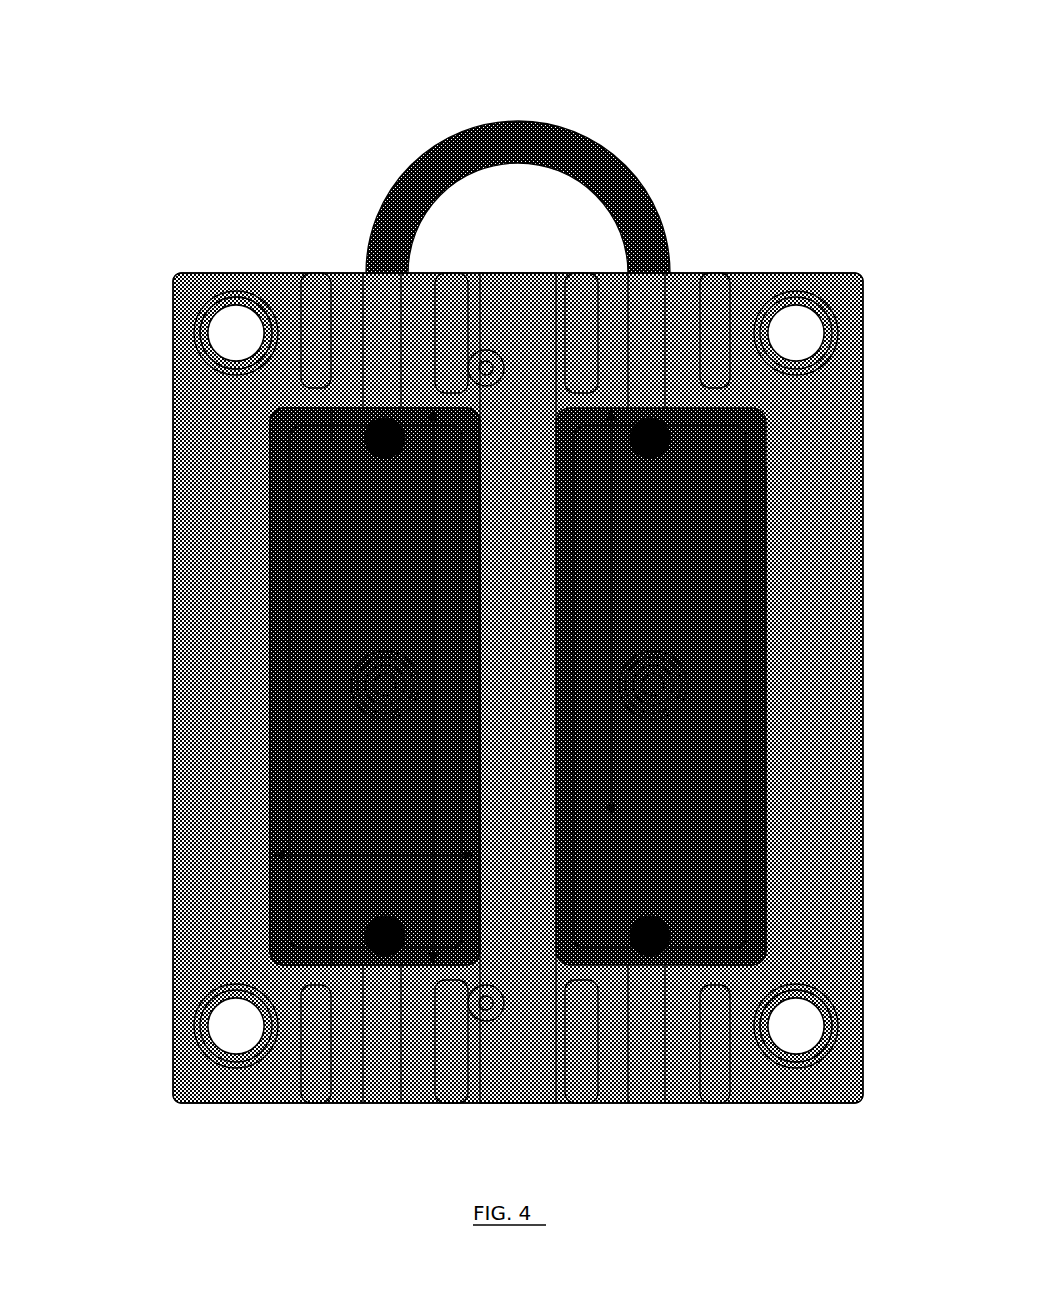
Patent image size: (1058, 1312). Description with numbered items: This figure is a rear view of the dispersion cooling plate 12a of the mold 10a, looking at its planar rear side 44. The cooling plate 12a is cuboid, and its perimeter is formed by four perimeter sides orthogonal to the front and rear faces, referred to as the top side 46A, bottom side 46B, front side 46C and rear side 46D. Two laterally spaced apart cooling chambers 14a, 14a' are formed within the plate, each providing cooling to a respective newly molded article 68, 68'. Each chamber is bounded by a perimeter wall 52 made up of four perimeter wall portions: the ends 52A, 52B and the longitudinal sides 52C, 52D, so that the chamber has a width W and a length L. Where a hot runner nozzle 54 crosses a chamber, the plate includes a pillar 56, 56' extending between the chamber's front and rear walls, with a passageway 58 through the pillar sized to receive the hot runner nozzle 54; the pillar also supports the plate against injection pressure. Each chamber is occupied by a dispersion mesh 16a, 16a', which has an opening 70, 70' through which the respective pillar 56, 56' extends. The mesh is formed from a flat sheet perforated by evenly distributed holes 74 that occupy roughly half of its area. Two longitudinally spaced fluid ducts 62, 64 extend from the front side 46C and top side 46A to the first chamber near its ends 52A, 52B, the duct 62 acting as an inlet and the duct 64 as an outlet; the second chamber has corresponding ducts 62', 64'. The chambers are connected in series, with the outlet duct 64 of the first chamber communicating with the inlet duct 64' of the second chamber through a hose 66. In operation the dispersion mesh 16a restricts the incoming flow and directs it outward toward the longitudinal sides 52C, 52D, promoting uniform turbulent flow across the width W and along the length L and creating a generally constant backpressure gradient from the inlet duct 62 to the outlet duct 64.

The mold 10a is at (243, 78).
The cooling plate 12a is at (150, 415).
The cooling chamber 14a is at (156, 688).
The cooling chamber 14a' is at (860, 688).
The dispersion mesh 16a is at (190, 941).
The dispersion mesh 16a' is at (828, 917).
The rear side 44 is at (790, 485).
The top side 46A is at (228, 265).
The bottom side 46B is at (785, 1095).
The front side 46C is at (165, 318).
The rear side 46D is at (855, 950).
The perimeter wall 52 is at (270, 590).
The end 52A is at (325, 420).
The end 52B is at (320, 922).
The longitudinal side 52C is at (275, 540).
The longitudinal side 52D is at (450, 670).
The hot runner nozzle 54 is at (350, 660).
The pillar 56 is at (229, 713).
The pillar 56' is at (789, 694).
The passageway 58 is at (372, 700).
The fluid duct 62 is at (384, 1078).
The fluid duct 62' is at (647, 1078).
The fluid duct 64 is at (384, 288).
The fluid duct 64' is at (656, 288).
The hose 66 is at (480, 148).
The molded article 68 is at (266, 686).
The molded article 68' is at (751, 686).
The opening 70 is at (236, 652).
The opening 70' is at (782, 680).
The holes 74 is at (452, 430).
The length L is at (440, 500).
The width W is at (440, 847).